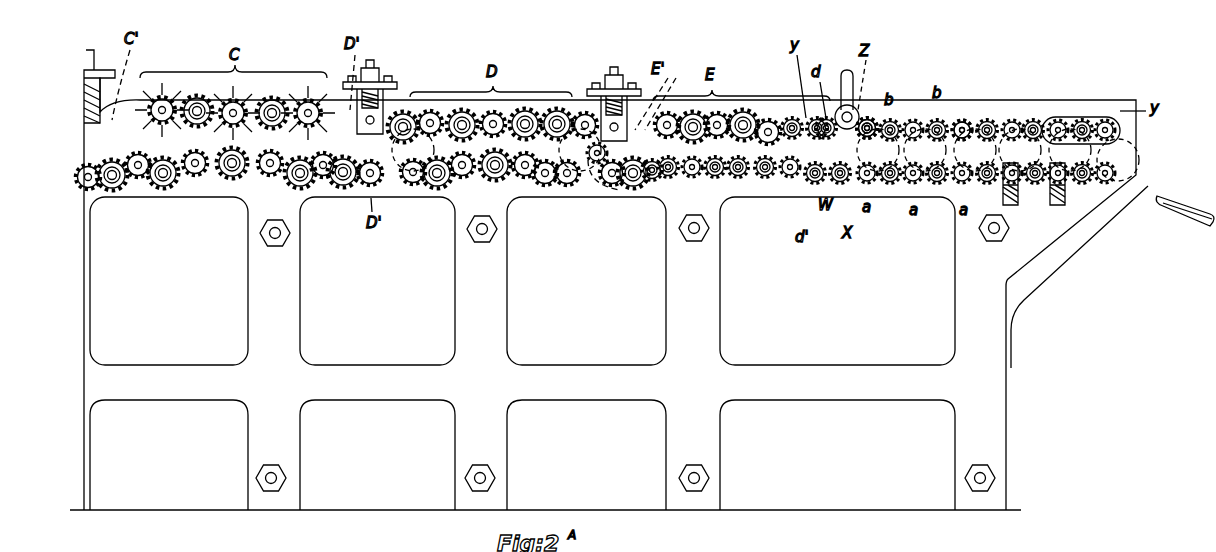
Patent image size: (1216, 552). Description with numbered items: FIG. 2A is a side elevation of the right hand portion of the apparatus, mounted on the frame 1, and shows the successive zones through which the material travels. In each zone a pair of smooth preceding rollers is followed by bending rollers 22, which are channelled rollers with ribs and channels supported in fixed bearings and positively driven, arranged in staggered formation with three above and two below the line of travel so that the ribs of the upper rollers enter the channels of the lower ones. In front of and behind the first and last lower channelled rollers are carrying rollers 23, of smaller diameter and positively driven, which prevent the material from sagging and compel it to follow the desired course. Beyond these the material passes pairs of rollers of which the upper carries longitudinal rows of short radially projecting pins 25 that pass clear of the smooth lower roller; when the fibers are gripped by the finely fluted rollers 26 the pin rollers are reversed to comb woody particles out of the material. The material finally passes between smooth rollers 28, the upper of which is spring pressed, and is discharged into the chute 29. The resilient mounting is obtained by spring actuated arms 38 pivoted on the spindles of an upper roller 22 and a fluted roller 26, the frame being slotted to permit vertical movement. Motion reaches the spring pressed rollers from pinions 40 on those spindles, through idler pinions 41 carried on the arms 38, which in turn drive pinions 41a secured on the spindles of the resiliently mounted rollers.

The frame 1 is at (982, 295).
The bending rollers 22 is at (245, 185).
The carrying rollers 23 is at (580, 190).
The pins 25 is at (871, 108).
The finely fluted rollers 26 is at (1022, 112).
The smooth rollers 28 is at (1117, 111).
The chute 29 is at (1164, 197).
The spring actuated arms 38 is at (786, 124).
The pinions 40 is at (768, 168).
The idler pinions 41 is at (795, 167).
The pinions 41a is at (1150, 136).